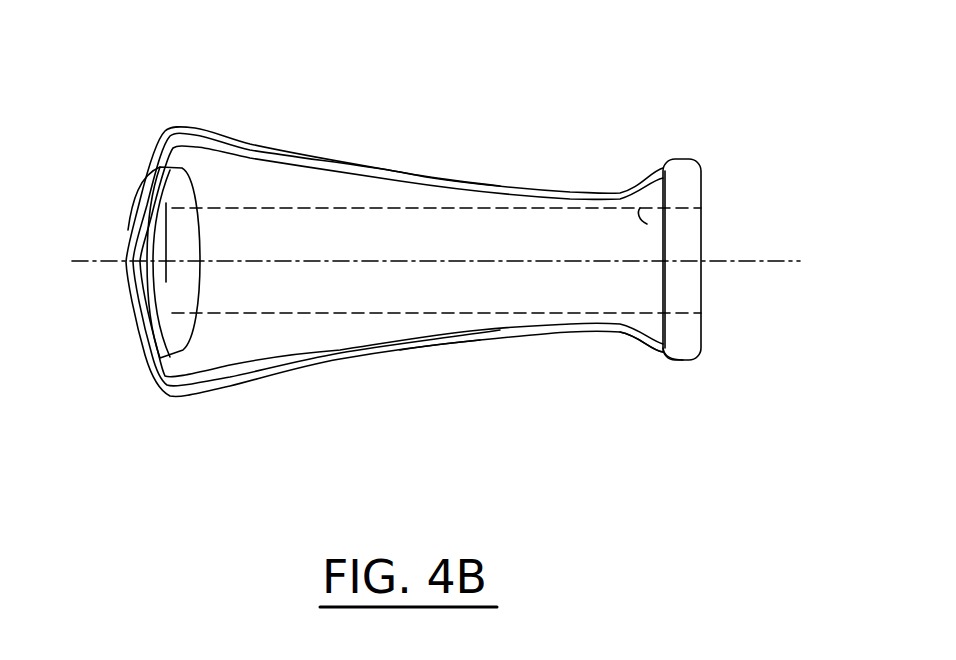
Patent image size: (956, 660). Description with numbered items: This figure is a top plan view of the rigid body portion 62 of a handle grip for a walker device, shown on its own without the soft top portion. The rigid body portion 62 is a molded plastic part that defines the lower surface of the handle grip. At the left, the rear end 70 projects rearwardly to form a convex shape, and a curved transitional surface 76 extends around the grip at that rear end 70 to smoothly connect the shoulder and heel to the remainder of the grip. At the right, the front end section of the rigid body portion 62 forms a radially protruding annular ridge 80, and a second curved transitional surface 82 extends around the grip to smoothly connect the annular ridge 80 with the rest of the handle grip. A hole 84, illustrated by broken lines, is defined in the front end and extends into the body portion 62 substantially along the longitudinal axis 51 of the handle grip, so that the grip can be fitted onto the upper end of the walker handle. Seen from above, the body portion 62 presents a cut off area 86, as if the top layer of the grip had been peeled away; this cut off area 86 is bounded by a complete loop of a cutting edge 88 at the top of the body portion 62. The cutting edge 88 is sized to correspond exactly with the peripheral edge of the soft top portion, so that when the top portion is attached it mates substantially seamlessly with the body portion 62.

The longitudinal axis 51 is at (770, 260).
The rigid body portion 62 is at (482, 338).
The rear end 70 is at (128, 232).
The curved transitional surface 76 is at (702, 293).
The radially protruding annular ridge 80 is at (683, 360).
The curved transitional surface 82 is at (633, 335).
The hole 84 is at (652, 230).
The cut off area 86 is at (383, 227).
The cutting edge 88 is at (242, 163).